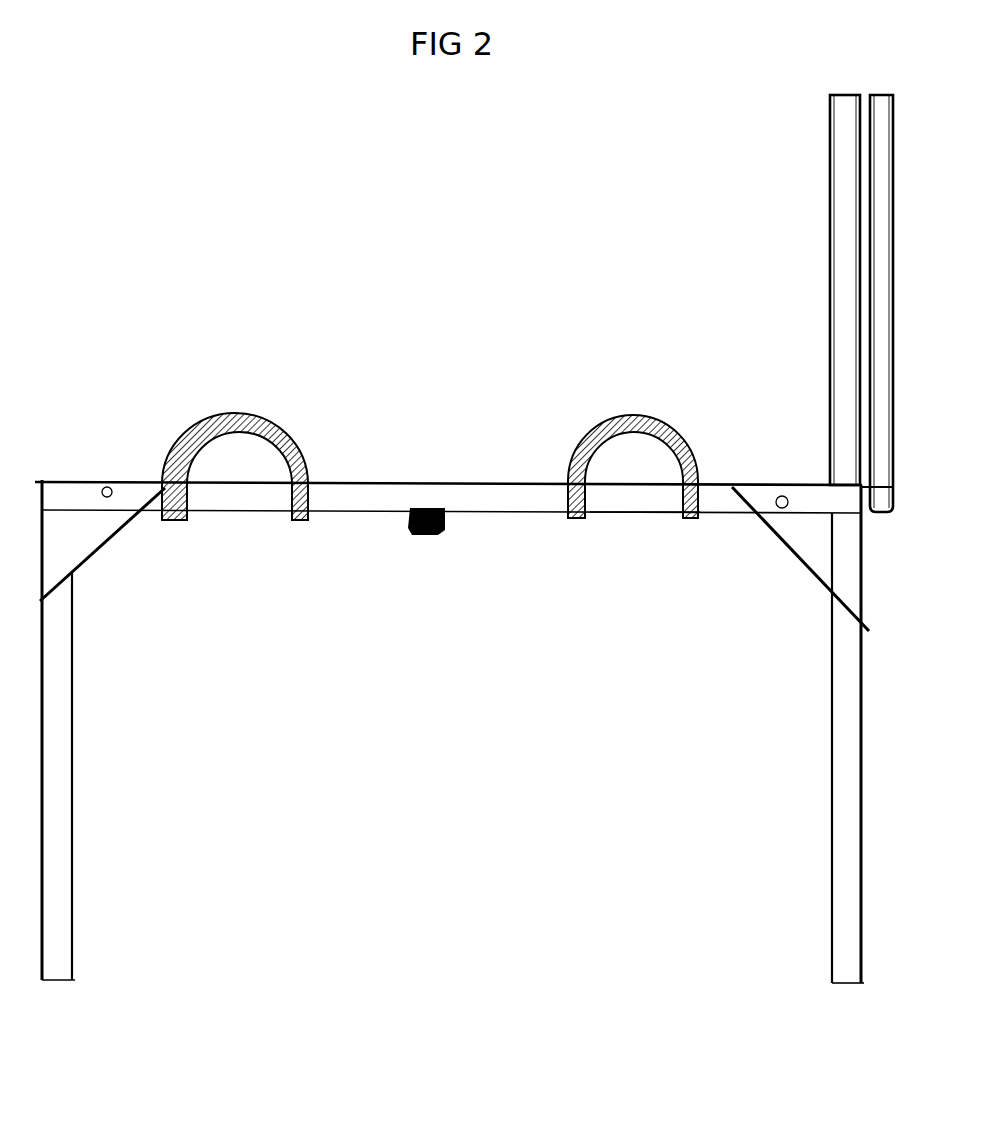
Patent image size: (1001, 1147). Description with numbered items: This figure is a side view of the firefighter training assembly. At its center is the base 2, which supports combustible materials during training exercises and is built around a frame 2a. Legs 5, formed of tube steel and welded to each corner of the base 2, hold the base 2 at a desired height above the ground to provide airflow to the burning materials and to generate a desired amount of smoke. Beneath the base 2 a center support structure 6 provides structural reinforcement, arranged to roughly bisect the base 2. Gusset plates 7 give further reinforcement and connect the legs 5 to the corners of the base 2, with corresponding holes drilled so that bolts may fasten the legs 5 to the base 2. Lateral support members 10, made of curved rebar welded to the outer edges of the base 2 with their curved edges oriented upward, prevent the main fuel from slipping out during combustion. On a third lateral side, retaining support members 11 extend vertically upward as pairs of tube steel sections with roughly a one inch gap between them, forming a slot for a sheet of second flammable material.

The base 2 is at (500, 472).
The frame 2a is at (640, 497).
The legs 5 is at (66, 887).
The center support structure 6 is at (445, 536).
The gusset plates 7 is at (95, 540).
The lateral support members 10 is at (212, 428).
The retaining support members 11 is at (840, 220).